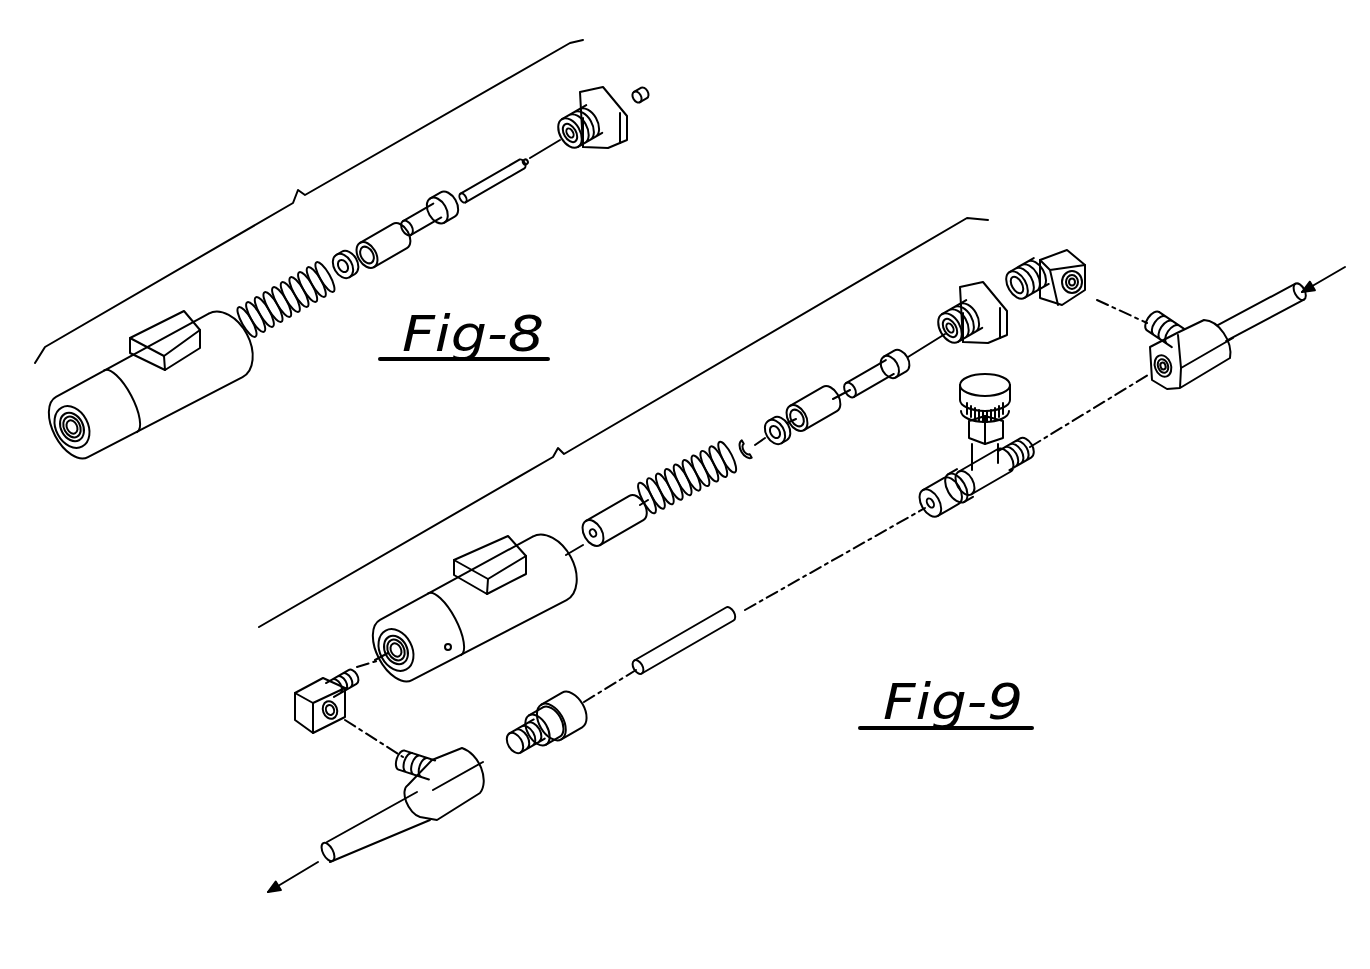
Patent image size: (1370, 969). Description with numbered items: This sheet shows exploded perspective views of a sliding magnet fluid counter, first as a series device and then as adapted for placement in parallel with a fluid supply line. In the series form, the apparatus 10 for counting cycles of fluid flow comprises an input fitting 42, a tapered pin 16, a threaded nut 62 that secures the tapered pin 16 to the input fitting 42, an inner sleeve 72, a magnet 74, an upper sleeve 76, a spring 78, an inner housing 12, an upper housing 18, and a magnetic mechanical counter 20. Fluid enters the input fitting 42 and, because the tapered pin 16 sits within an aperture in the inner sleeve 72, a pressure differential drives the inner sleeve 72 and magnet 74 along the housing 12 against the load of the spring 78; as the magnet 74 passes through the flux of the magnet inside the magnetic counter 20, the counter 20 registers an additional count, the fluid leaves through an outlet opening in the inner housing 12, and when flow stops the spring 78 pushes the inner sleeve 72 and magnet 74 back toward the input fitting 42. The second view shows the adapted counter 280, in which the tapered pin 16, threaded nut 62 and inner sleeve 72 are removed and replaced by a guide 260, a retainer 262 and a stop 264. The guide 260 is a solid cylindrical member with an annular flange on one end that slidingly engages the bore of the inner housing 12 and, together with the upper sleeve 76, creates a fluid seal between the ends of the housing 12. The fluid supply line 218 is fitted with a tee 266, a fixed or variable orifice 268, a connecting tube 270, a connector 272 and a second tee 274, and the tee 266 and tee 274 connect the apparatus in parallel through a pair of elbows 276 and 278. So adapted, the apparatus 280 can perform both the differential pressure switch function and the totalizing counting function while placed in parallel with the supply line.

In FIG. 8, the apparatus for counting cycles of fluid flow 10 is at (320, 158).
In FIG. 8, the inner housing 12 is at (220, 360).
In FIG. 9, the inner housing 12 is at (553, 575).
In FIG. 8, the tapered pin 16 is at (507, 190).
In FIG. 8, the upper housing 18 is at (148, 400).
In FIG. 9, the upper housing 18 is at (476, 612).
In FIG. 8, the magnetic mechanical counter 20 is at (172, 328).
In FIG. 9, the magnetic mechanical counter 20 is at (488, 556).
In FIG. 8, the input fitting 42 is at (627, 132).
In FIG. 9, the input fitting 42 is at (1010, 328).
In FIG. 8, the threaded nut 62 is at (648, 93).
In FIG. 8, the inner sleeve 72 is at (447, 215).
In FIG. 8, the magnet 74 is at (388, 250).
In FIG. 9, the magnet 74 is at (825, 414).
In FIG. 8, the upper sleeve 76 is at (345, 284).
In FIG. 9, the upper sleeve 76 is at (784, 446).
In FIG. 8, the spring 78 is at (290, 322).
In FIG. 9, the spring 78 is at (696, 492).
In FIG. 9, the fluid supply line 218 is at (1262, 316).
In FIG. 9, the guide 260 is at (875, 382).
In FIG. 9, the retainer 262 is at (751, 460).
In FIG. 9, the stop 264 is at (620, 527).
In FIG. 9, the tee 266 is at (1207, 358).
In FIG. 9, the fixed or variable orifice 268 is at (1003, 470).
In FIG. 9, the connecting tube 270 is at (703, 640).
In FIG. 9, the connector 272 is at (565, 728).
In FIG. 9, the second tee 274 is at (463, 793).
In FIG. 9, the elbow 276 is at (1076, 262).
In FIG. 9, the elbow 278 is at (302, 706).
In FIG. 9, the adapted counter 280 is at (975, 553).